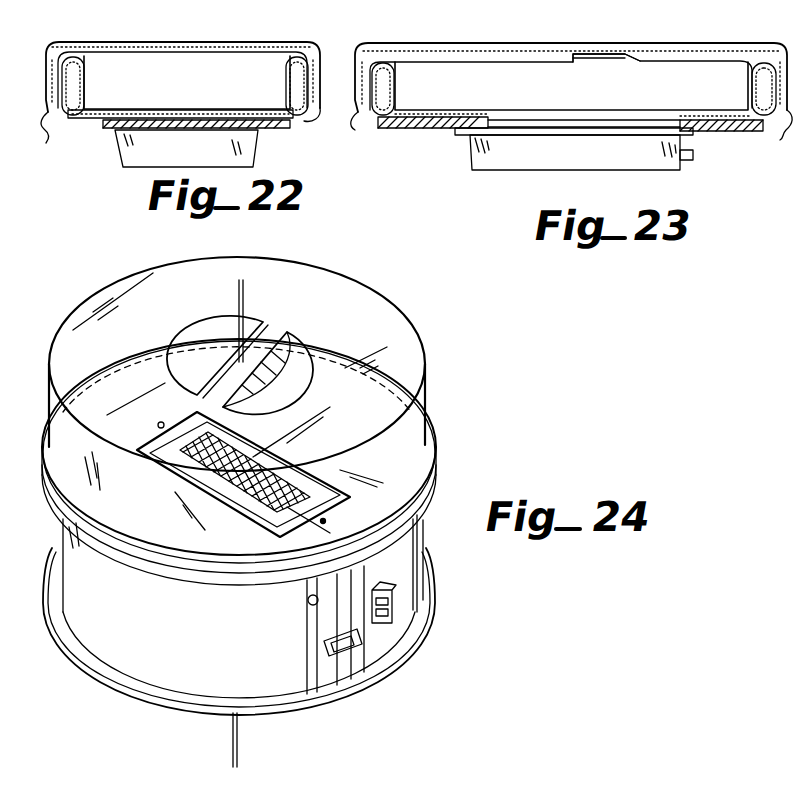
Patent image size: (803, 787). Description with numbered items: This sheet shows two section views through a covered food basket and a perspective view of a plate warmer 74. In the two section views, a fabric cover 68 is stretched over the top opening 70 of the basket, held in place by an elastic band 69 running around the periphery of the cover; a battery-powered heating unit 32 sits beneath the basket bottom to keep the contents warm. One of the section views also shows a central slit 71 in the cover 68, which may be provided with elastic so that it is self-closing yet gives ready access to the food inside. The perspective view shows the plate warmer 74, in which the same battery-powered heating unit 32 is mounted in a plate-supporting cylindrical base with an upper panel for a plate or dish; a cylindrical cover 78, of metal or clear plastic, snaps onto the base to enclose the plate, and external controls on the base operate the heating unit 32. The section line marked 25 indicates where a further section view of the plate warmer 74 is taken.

In FIG. 22, the battery-powered heating unit 32 is at (265, 153).
In FIG. 23, the battery-powered heating unit 32 is at (473, 177).
In FIG. 22, the fabric cover 68 is at (242, 17).
In FIG. 23, the fabric cover 68 is at (730, 50).
In FIG. 22, the elastic band 69 is at (48, 128).
In FIG. 23, the elastic band 69 is at (773, 128).
In FIG. 22, the top opening 70 is at (78, 68).
In FIG. 23, the top opening 70 is at (374, 48).
In FIG. 23, the central slit 71 is at (634, 45).
In FIG. 24, the plate warmer 74 is at (438, 556).
In FIG. 24, the cylindrical cover 78 is at (384, 330).
In FIG. 24, the section line 25- 25 is at (276, 730).